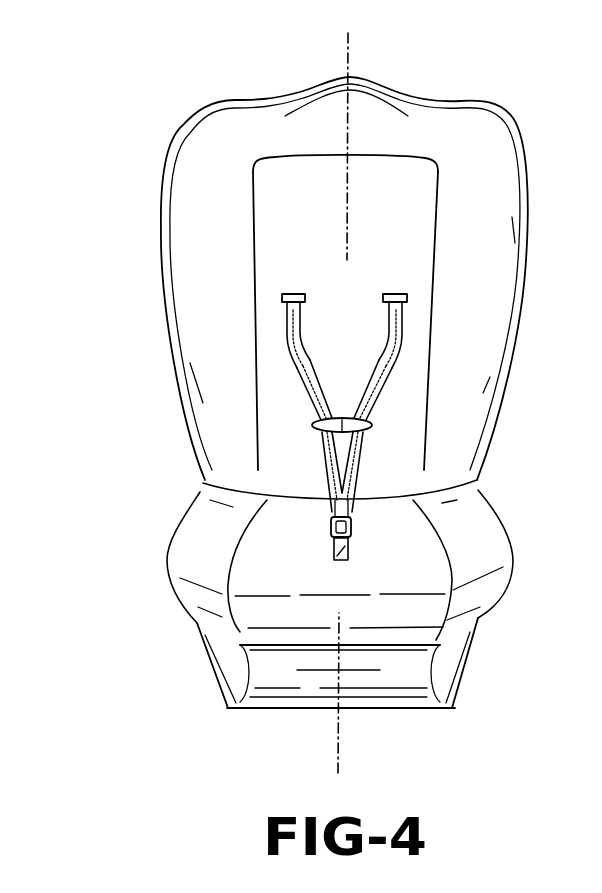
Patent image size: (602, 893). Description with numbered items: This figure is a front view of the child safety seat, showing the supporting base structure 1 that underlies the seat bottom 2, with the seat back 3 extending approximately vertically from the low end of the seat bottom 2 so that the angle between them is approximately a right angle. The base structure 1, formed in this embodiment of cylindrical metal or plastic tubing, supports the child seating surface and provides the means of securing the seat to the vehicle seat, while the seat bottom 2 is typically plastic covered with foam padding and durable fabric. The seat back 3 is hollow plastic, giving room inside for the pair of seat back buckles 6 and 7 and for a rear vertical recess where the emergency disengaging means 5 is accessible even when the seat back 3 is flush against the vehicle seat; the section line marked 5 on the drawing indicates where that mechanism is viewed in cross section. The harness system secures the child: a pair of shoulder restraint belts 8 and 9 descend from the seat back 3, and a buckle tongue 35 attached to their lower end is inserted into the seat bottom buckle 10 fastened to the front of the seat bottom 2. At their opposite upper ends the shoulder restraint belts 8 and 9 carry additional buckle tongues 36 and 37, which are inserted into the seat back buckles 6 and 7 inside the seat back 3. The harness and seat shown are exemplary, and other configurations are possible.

The supporting base structure 1 is at (465, 667).
The seat bottom 2 is at (273, 557).
The seat back 3 is at (338, 353).
The emergency disengaging means 5 is at (348, 33).
The seat back buckle 6 is at (283, 310).
The seat back buckle 7 is at (407, 303).
The shoulder restraint belt 8 is at (363, 400).
The shoulder restraint belt 9 is at (327, 390).
The seat bottom buckle 10 is at (337, 560).
The buckle tongue 35 is at (353, 533).
The buckle tongue 36 is at (405, 295).
The buckle tongue 37 is at (283, 296).